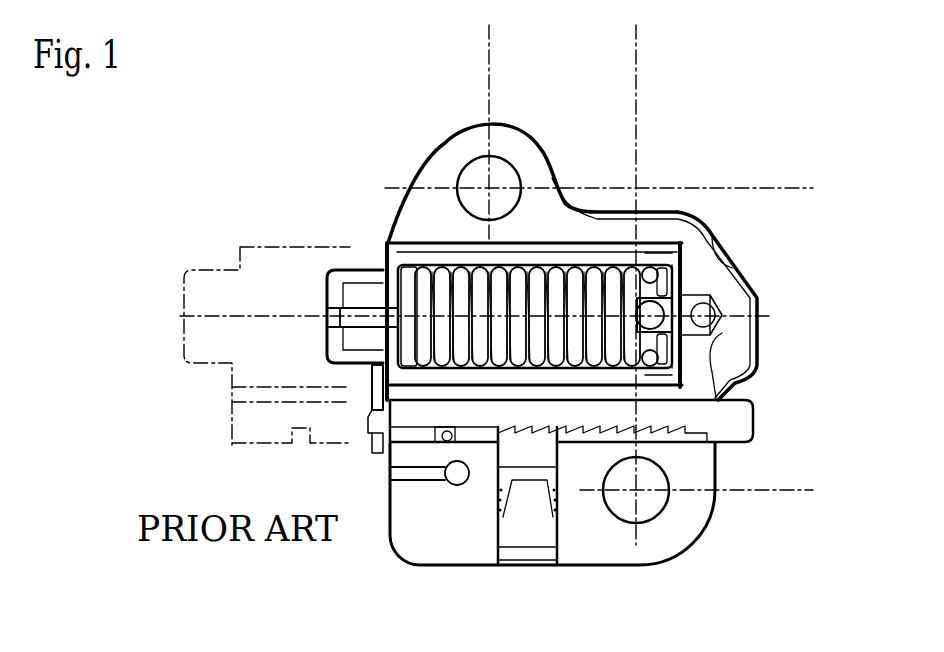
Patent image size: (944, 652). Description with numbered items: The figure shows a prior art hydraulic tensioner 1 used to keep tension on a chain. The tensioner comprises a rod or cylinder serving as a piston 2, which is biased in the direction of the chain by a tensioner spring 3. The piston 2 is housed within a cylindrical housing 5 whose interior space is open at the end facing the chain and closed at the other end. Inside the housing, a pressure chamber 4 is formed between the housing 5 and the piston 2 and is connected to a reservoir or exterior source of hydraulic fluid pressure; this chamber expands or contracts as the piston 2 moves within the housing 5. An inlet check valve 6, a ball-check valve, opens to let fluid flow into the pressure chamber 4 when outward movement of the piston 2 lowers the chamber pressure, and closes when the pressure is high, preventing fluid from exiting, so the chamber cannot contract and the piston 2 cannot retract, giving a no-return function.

The hydraulic tensioner 1 is at (334, 84).
The piston 2 is at (343, 280).
The tensioner spring 3 is at (425, 275).
The pressure chamber 4 is at (566, 268).
The cylindrical housing 5 is at (688, 237).
The inlet check valve 6 is at (652, 310).